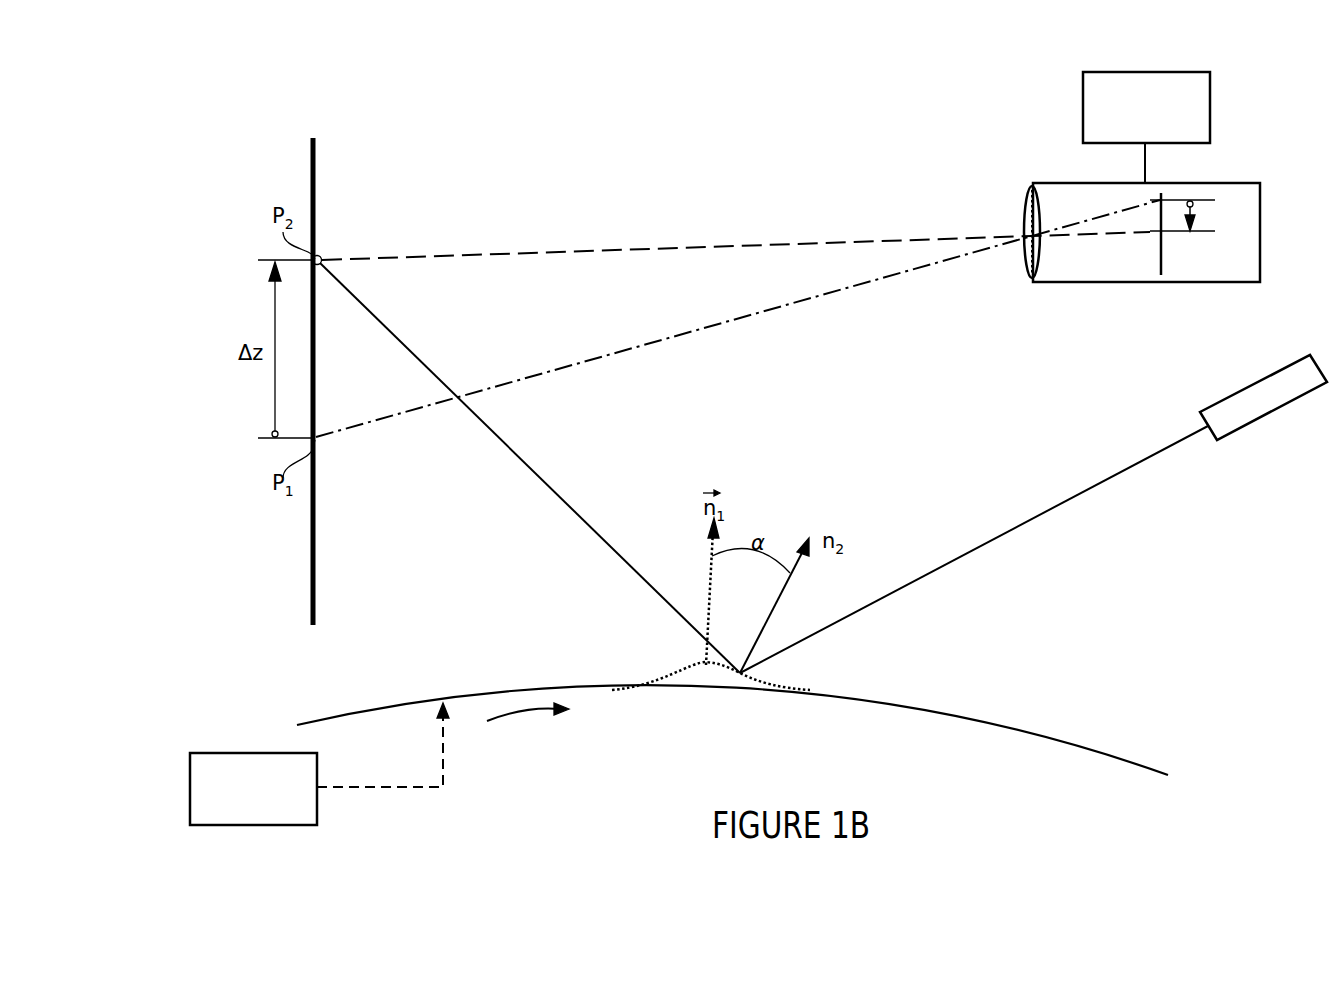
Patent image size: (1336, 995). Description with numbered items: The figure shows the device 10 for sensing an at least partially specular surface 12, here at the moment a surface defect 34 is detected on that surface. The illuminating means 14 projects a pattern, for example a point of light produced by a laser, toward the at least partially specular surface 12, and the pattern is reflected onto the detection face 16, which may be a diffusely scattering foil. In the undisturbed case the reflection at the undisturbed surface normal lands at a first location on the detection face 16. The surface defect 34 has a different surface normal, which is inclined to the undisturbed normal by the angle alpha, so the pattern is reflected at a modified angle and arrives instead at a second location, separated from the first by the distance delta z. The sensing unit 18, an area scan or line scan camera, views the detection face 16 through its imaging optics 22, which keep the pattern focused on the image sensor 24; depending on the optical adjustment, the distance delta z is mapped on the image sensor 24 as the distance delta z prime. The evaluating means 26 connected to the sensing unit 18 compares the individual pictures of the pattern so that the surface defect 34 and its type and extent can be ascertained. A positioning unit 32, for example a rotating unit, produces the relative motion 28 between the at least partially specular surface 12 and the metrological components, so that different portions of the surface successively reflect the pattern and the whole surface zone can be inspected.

The device 10 is at (254, 137).
The at least partially specular surface 12 is at (1123, 753).
The illuminating means 14 is at (1279, 414).
The detection face 16 is at (312, 165).
The sensing unit 18 is at (1143, 227).
The imaging optics 22 is at (1027, 214).
The image sensor 24 is at (1163, 258).
The evaluating means 26 is at (1212, 104).
The relative motion 28 is at (529, 718).
The positioning unit 32 is at (256, 753).
The surface defect 34 is at (634, 675).